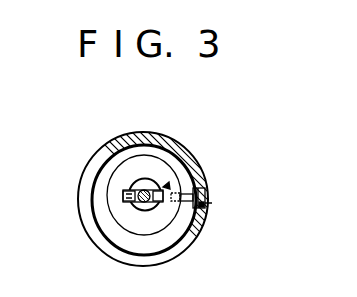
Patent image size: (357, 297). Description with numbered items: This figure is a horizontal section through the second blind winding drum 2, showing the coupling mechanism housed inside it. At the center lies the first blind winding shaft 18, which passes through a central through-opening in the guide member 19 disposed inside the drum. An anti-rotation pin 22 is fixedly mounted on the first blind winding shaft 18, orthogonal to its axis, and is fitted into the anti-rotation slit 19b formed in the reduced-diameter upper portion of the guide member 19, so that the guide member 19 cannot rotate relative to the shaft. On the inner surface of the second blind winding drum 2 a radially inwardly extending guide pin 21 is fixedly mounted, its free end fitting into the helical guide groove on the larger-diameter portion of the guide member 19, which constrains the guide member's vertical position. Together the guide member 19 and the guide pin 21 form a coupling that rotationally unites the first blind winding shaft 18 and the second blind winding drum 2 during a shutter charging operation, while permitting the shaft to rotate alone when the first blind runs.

The second blind winding drum 2 is at (93, 163).
The guide member 19 is at (130, 167).
The first blind winding shaft 18 is at (157, 191).
The anti-rotation slit 19b is at (164, 186).
The guide pin 21 is at (203, 218).
The anti-rotation pin 22 is at (124, 202).